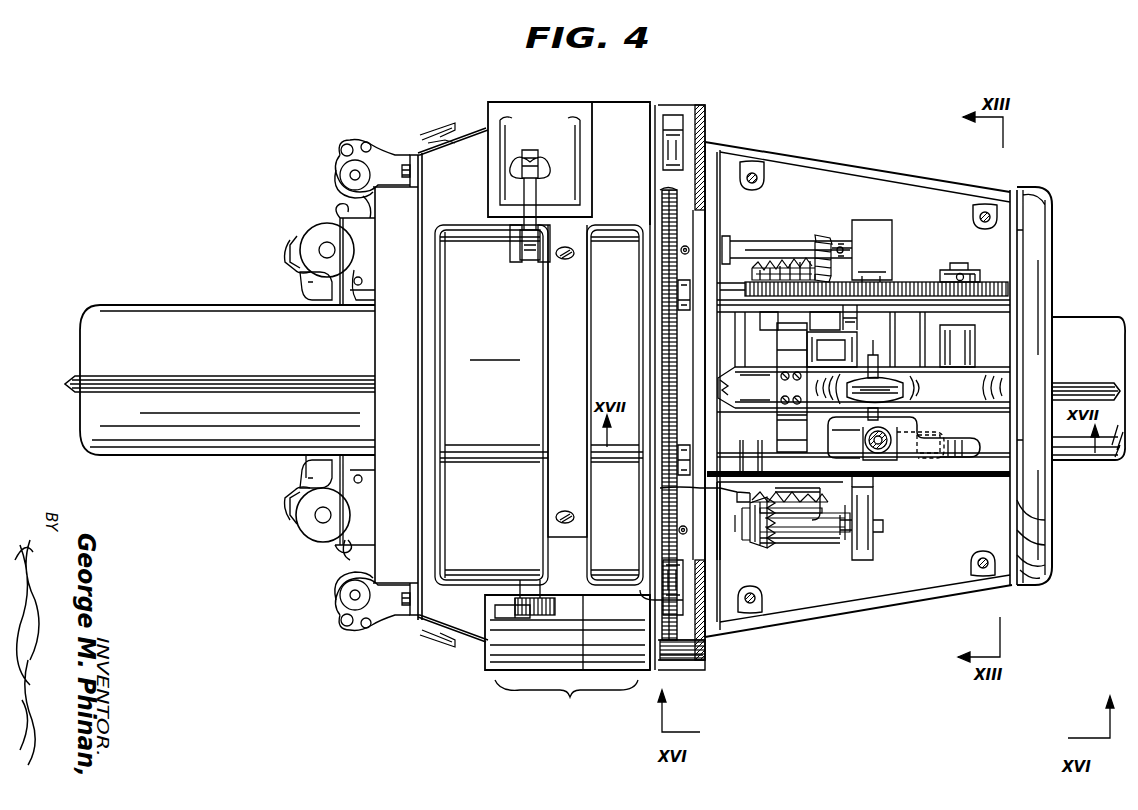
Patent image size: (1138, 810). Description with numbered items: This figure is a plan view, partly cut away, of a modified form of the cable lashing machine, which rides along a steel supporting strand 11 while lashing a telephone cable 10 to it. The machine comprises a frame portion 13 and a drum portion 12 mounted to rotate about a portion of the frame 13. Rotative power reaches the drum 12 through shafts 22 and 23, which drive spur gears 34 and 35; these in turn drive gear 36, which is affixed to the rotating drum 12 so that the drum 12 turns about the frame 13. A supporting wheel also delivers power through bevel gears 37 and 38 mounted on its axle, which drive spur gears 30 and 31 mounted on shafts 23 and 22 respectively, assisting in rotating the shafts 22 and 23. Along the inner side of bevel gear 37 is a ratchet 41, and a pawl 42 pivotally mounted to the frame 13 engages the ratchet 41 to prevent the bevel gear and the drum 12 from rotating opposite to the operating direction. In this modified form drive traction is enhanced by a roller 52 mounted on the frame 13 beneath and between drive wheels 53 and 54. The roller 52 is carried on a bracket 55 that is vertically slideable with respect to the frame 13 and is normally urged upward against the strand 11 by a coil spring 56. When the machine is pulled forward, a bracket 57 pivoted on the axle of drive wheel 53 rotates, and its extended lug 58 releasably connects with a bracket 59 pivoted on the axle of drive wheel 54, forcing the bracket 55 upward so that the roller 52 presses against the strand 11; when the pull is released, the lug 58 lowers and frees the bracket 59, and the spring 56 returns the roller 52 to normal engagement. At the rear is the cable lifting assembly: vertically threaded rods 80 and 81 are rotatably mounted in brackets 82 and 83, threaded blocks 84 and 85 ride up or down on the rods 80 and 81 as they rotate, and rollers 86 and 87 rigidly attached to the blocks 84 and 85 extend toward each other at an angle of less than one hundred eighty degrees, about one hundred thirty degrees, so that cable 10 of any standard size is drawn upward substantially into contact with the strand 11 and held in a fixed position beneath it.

The telephone cable 10 is at (125, 308).
The strand 11 is at (165, 382).
The drum portion 12 is at (567, 412).
The frame portion 13 is at (820, 615).
The shaft 22 is at (885, 528).
The shaft 23 is at (757, 242).
The spur gear 30 is at (753, 542).
The spur gear 31 is at (823, 238).
The spur gear 34 is at (640, 590).
The spur gear 35 is at (662, 190).
The gear 36 is at (662, 361).
The bevel gear 37 is at (798, 514).
The bevel gear 38 is at (778, 262).
The ratchet 41 is at (829, 503).
The pawl 42 is at (660, 491).
The roller 52 is at (882, 378).
The drive wheel 53 is at (750, 382).
The drive wheel 54 is at (988, 388).
The bracket 55 is at (860, 351).
The coil spring 56 is at (882, 456).
The bracket 57 is at (785, 428).
The lug 58 is at (906, 420).
The bracket 59 is at (938, 460).
The threaded rod 80 is at (323, 247).
The threaded rod 81 is at (320, 520).
The bracket 82 is at (362, 212).
The bracket 83 is at (347, 553).
The threaded block 84 is at (300, 276).
The threaded block 85 is at (300, 486).
The roller 86 is at (305, 298).
The roller 87 is at (305, 462).